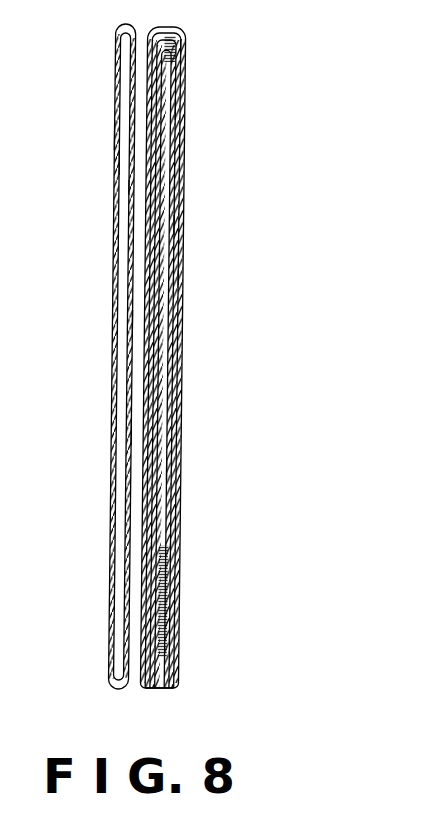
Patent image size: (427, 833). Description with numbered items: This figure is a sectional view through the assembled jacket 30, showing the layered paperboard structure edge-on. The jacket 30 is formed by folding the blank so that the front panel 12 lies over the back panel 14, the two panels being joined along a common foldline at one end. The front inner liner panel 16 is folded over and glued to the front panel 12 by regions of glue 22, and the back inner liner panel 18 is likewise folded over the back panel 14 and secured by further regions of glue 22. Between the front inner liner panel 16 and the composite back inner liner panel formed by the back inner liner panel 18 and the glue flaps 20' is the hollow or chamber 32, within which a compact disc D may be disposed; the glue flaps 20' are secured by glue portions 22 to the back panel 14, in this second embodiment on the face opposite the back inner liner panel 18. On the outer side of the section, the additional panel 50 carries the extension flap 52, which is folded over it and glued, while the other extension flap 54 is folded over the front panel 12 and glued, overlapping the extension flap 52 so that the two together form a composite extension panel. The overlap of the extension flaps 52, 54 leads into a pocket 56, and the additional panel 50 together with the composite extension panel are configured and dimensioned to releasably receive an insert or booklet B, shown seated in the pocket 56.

The jacket 30 is at (101, 637).
The insert or booklet B is at (132, 70).
The additional panel 50 is at (119, 140).
The extension flap 52 is at (122, 162).
The region of glue 22 is at (126, 188).
The front inner liner panel 16 is at (128, 244).
The front panel 12 is at (132, 276).
The extension flap 54 is at (122, 326).
The pocket 56 is at (131, 436).
The compact disc D is at (184, 48).
The glue flap 20' is at (209, 346).
The back inner liner panel 18 is at (184, 298).
The back panel 14 is at (184, 335).
The chamber 32 is at (170, 665).